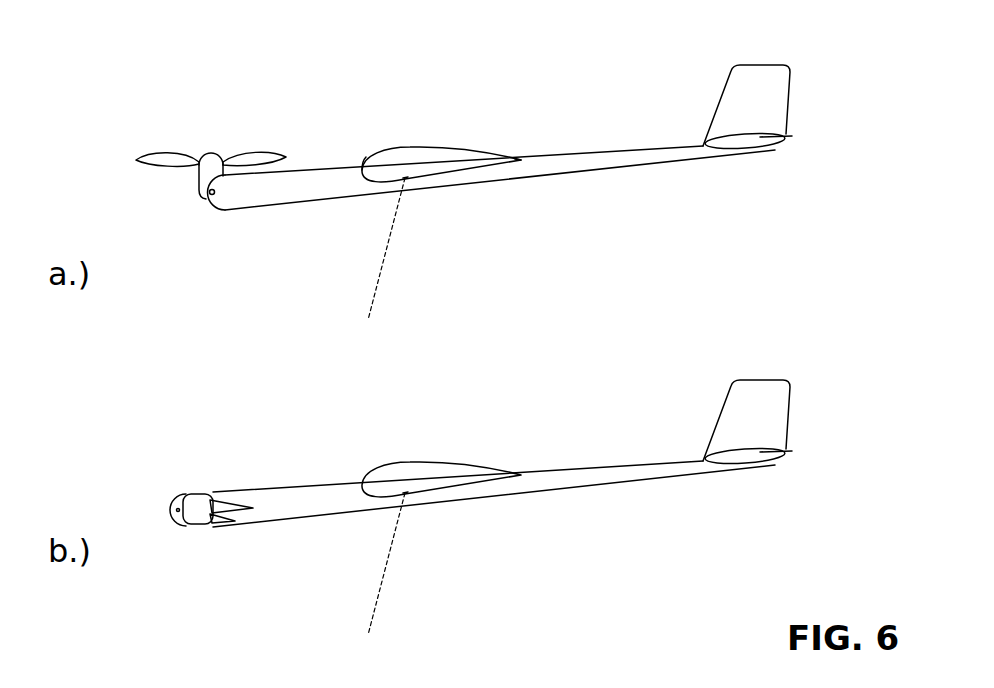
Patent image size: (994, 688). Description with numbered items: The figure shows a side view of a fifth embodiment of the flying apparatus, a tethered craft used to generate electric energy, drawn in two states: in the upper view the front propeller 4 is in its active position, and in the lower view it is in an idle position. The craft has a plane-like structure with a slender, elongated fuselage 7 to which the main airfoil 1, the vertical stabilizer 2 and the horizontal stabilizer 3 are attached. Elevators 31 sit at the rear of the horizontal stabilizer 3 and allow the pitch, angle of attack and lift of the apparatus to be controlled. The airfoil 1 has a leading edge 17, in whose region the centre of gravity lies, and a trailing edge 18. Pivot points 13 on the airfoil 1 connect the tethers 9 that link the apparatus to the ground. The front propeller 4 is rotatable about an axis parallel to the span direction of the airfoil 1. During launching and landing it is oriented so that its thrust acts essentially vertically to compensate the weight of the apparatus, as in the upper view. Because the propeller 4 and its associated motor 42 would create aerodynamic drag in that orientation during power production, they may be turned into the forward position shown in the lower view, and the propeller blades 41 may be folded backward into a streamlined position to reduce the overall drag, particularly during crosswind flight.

The main airfoil 1 is at (423, 157).
The vertical stabilizer 2 is at (765, 78).
The horizontal stabilizer 3 is at (727, 148).
The elevators 31 is at (770, 141).
The front propeller 4 is at (189, 288).
The propeller blades 41 is at (255, 159).
The motor 42 is at (197, 178).
The fuselage 7 is at (612, 164).
The tethers 9 is at (380, 273).
The pivot points 13 is at (405, 178).
The leading edge 17 is at (358, 168).
The trailing edge 18 is at (517, 161).